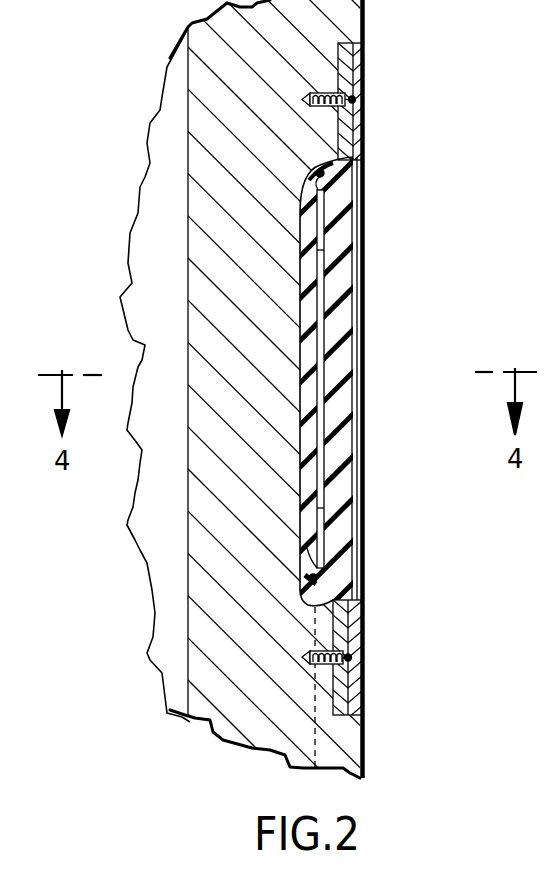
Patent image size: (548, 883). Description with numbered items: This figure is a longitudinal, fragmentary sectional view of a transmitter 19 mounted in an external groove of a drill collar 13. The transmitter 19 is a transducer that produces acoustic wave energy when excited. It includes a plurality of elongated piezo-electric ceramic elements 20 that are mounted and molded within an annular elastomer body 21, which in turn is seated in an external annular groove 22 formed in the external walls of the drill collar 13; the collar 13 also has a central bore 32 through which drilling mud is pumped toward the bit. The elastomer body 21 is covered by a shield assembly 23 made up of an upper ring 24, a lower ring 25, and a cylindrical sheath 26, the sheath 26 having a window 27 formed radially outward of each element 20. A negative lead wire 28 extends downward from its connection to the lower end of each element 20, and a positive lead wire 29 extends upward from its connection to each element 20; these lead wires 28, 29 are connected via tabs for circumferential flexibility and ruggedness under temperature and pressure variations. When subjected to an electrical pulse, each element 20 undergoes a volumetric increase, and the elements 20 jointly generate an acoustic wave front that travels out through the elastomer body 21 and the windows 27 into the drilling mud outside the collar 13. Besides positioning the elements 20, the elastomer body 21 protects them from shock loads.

The drill collar 13 is at (303, 733).
The transmitter 19 is at (378, 312).
The piezo-electric ceramic elements 20 is at (320, 394).
The elastomer body 21 is at (340, 262).
The groove 22 is at (318, 472).
The shield assembly 23 is at (368, 98).
The upper ring 24 is at (354, 48).
The lower ring 25 is at (343, 637).
The cylindrical sheath 26 is at (364, 128).
The window 27 is at (364, 352).
The negative lead wire 28 is at (333, 567).
The positive lead wire 29 is at (328, 176).
The central bore 32 is at (152, 537).